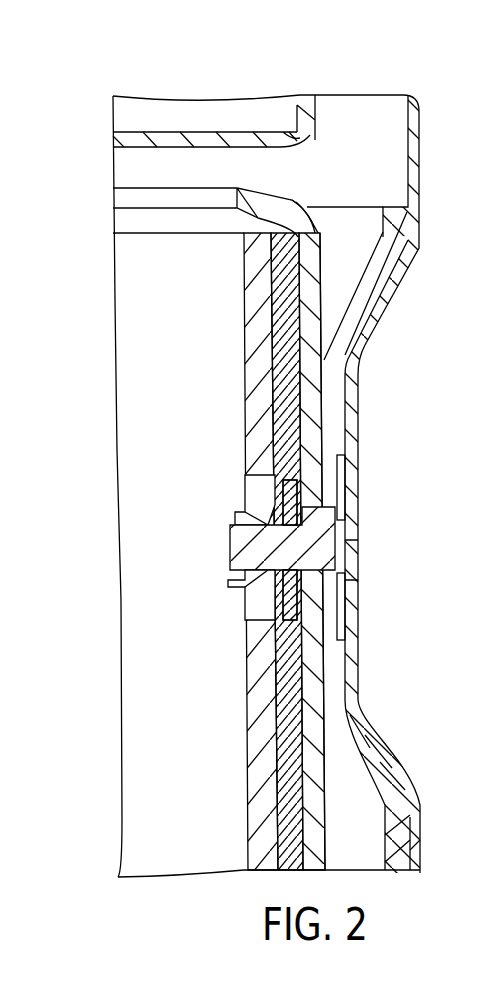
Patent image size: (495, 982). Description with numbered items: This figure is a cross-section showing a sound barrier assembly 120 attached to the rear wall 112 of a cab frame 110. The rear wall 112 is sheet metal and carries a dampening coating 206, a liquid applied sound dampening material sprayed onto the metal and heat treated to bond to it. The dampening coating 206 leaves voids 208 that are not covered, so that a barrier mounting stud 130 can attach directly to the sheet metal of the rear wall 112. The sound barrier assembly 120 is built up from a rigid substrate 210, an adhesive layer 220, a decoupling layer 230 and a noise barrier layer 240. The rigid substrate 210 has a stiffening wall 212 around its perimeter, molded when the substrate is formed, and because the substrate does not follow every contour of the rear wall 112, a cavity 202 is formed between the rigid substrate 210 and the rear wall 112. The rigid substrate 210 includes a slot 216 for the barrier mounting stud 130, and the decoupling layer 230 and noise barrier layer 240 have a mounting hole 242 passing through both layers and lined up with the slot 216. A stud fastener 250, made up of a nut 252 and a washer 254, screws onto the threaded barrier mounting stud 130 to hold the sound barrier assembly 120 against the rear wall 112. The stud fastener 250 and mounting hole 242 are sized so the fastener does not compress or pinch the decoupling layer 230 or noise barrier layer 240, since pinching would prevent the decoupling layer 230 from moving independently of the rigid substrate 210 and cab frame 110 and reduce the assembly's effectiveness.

The cab frame 110 is at (90, 122).
The rear wall 112 is at (392, 753).
The sound barrier assembly 120 is at (281, 551).
The barrier mounting stud 130 is at (343, 553).
The cavity 202 is at (360, 243).
The dampening coating 206 is at (400, 813).
The void 208 is at (347, 480).
The rigid substrate 210 is at (305, 262).
The stiffening wall 212 is at (308, 205).
The slot 216 is at (342, 597).
The adhesive layer 220 is at (322, 324).
The decoupling layer 230 is at (282, 400).
The noise barrier layer 240 is at (248, 297).
The mounting hole 242 is at (243, 488).
The stud fastener 250 is at (235, 540).
The nut 252 is at (272, 583).
The washer 254 is at (283, 603).